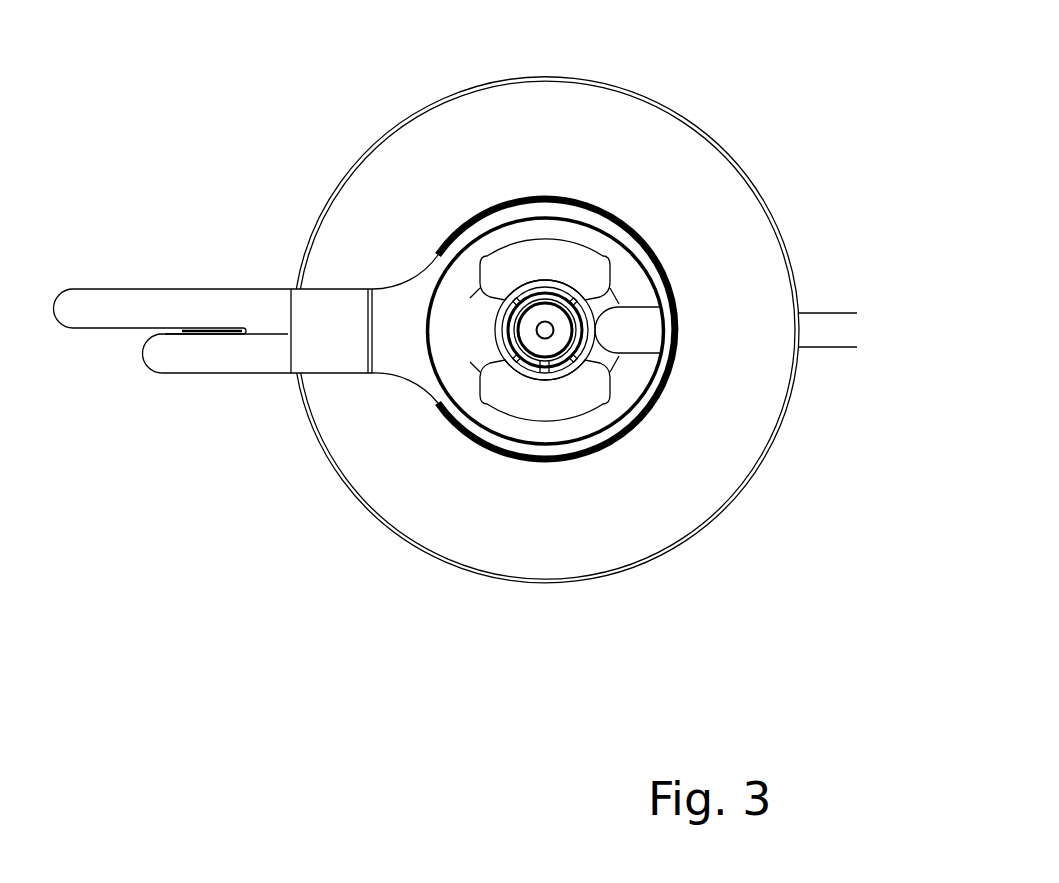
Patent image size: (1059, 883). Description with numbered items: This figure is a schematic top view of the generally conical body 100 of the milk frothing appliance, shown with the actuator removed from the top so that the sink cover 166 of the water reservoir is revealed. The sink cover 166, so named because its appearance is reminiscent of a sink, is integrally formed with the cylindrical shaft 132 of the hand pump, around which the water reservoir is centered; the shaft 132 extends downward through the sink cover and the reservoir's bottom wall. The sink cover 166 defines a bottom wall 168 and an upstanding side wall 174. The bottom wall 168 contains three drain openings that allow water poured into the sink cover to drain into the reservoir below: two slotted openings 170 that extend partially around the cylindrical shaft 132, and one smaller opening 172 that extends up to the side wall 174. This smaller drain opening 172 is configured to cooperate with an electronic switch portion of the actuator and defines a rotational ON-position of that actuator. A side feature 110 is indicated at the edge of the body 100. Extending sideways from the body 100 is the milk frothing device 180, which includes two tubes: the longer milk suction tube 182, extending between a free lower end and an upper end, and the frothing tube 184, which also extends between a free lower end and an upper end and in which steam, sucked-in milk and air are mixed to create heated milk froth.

The body 100 is at (655, 519).
The side flange 110 is at (838, 331).
The cylindrical shaft 132 is at (583, 310).
The sink cover 166 is at (462, 274).
The bottom wall 168 is at (618, 368).
The slotted openings 170 is at (544, 254).
The drain opening 172 is at (623, 330).
The side wall 174 is at (610, 361).
The milk frothing device 180 is at (242, 283).
The milk suction tube 182 is at (76, 308).
The frothing tube 184 is at (158, 352).